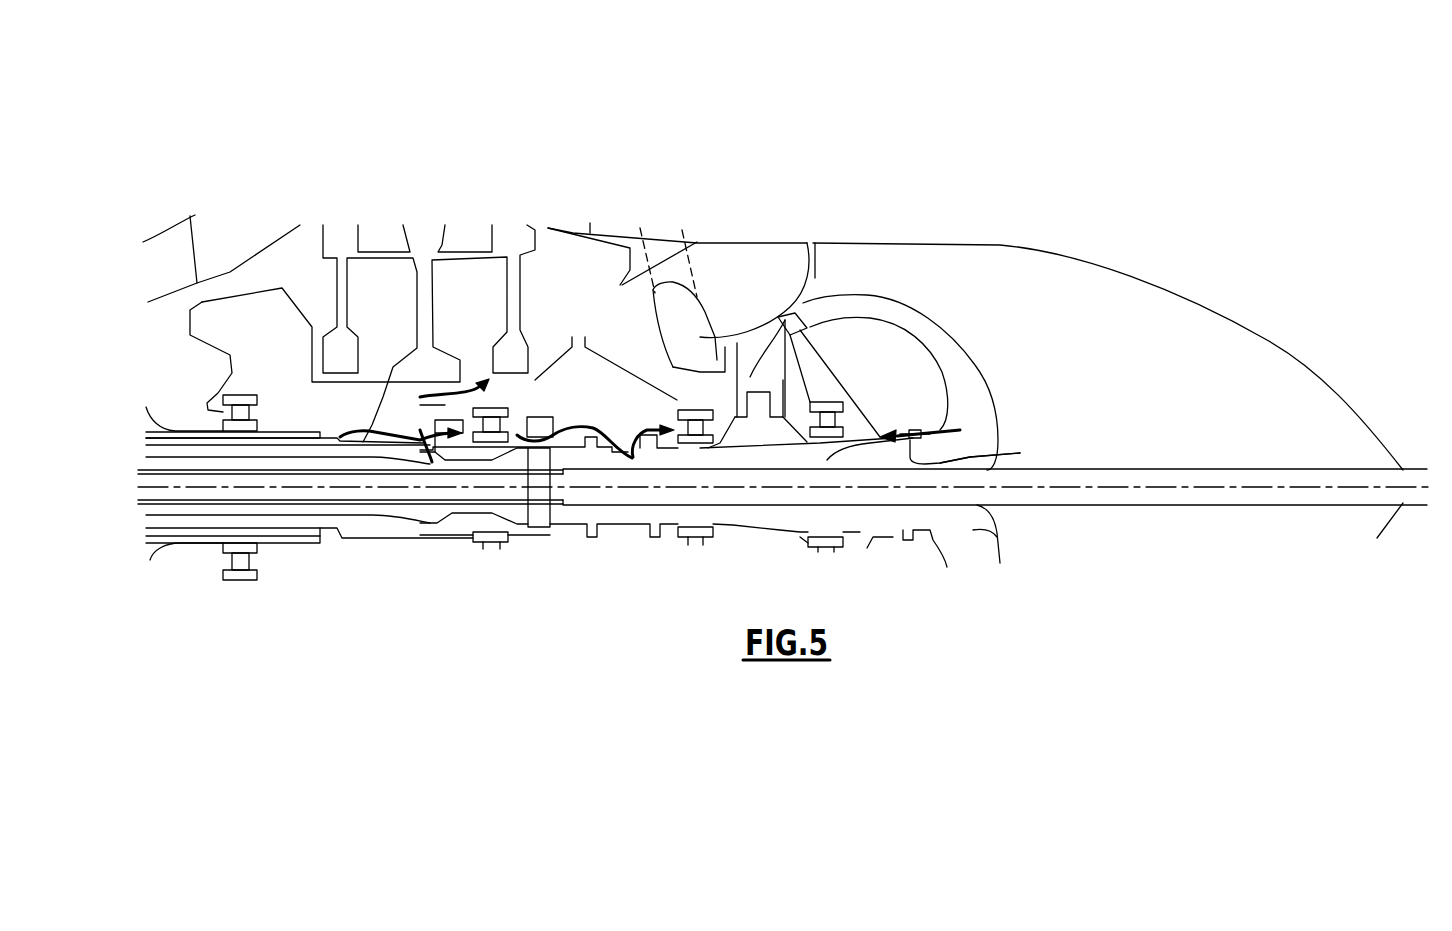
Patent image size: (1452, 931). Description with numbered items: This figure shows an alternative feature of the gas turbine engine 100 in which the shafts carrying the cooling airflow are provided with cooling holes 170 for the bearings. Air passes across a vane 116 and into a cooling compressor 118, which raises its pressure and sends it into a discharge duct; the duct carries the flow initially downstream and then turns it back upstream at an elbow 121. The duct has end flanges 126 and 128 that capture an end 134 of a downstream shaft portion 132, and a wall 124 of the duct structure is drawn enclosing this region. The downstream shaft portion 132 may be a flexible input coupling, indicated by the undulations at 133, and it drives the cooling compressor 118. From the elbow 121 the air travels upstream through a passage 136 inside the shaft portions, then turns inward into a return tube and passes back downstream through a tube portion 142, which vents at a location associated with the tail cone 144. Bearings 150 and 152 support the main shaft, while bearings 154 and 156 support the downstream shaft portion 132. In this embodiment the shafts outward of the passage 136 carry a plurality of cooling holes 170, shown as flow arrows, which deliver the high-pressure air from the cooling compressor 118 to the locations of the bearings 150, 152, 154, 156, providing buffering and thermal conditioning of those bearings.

The gas turbine engine 100 is at (276, 106).
The vane 116 is at (716, 355).
The cooling compressor 118 is at (753, 353).
The elbow 121 is at (997, 528).
The outer wall 124 is at (985, 405).
The end flange 126 is at (916, 430).
The end flange 128 is at (927, 448).
The downstream shaft portion 132 is at (567, 445).
The undulations 133 is at (587, 527).
The end of downstream shaft portion 134 is at (985, 456).
The passage 136 is at (827, 460).
The tube portion 142 is at (1128, 478).
The tail cone 144 is at (1307, 360).
The bearing 150 is at (205, 400).
The bearing 152 is at (498, 420).
The bearing 154 is at (700, 440).
The bearing 156 is at (828, 422).
The cooling holes 170 is at (370, 442).